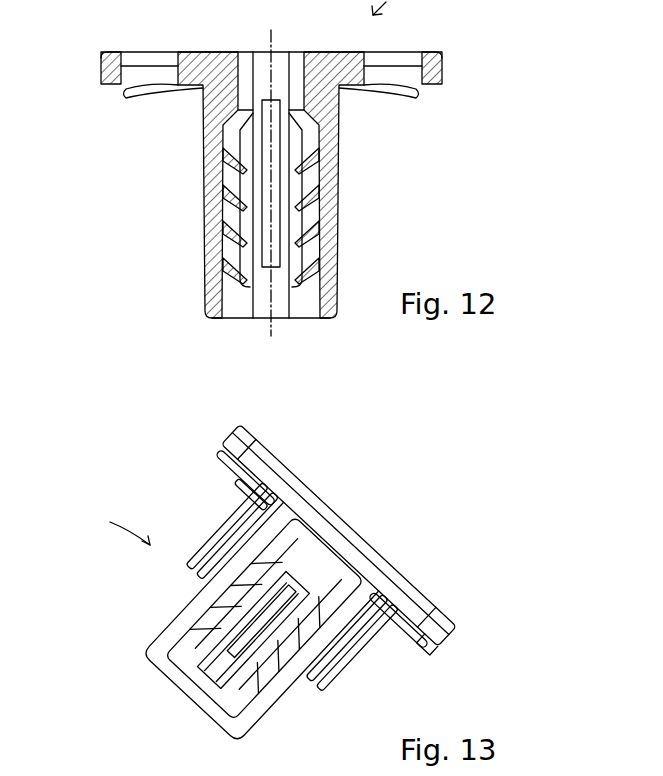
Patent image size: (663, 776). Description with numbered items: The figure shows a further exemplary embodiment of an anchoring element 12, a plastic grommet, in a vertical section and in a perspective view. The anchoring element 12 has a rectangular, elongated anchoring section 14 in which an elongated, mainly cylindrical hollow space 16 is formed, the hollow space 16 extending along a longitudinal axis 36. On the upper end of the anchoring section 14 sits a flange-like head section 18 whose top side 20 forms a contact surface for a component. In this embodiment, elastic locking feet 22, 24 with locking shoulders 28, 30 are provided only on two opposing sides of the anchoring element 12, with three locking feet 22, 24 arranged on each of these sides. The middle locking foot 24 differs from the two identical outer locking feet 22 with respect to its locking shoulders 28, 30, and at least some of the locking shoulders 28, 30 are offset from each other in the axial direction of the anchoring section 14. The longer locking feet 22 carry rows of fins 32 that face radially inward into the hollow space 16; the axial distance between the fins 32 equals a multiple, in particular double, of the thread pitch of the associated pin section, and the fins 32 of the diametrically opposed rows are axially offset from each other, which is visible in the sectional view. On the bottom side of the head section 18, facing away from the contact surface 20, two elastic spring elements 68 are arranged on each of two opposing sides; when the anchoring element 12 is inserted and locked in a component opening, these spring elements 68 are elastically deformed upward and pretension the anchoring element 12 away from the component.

In FIG. 12, the anchoring element 12 is at (379, 8).
In FIG. 13, the anchoring element 12 is at (117, 530).
In FIG. 12, the anchoring section 14 is at (342, 139).
In FIG. 13, the anchoring section 14 is at (160, 622).
In FIG. 12, the hollow space 16 is at (240, 307).
In FIG. 12, the head section 18 is at (112, 70).
In FIG. 13, the head section 18 is at (458, 637).
In FIG. 12, the top side 20 is at (193, 52).
In FIG. 13, the top side 20 is at (327, 500).
In FIG. 12, the locking foot 22 is at (212, 248).
In FIG. 13, the locking foot 22 is at (240, 530).
In FIG. 12, the locking foot 24 is at (288, 110).
In FIG. 13, the locking foot 24 is at (225, 677).
In FIG. 13, the locking shoulder 28 is at (283, 562).
In FIG. 13, the locking shoulder 30 is at (347, 612).
In FIG. 12, the fin 32 is at (237, 200).
In FIG. 12, the longitudinal axis 36 is at (271, 333).
In FIG. 12, the spring element 68 is at (150, 88).
In FIG. 13, the spring element 68 is at (218, 457).